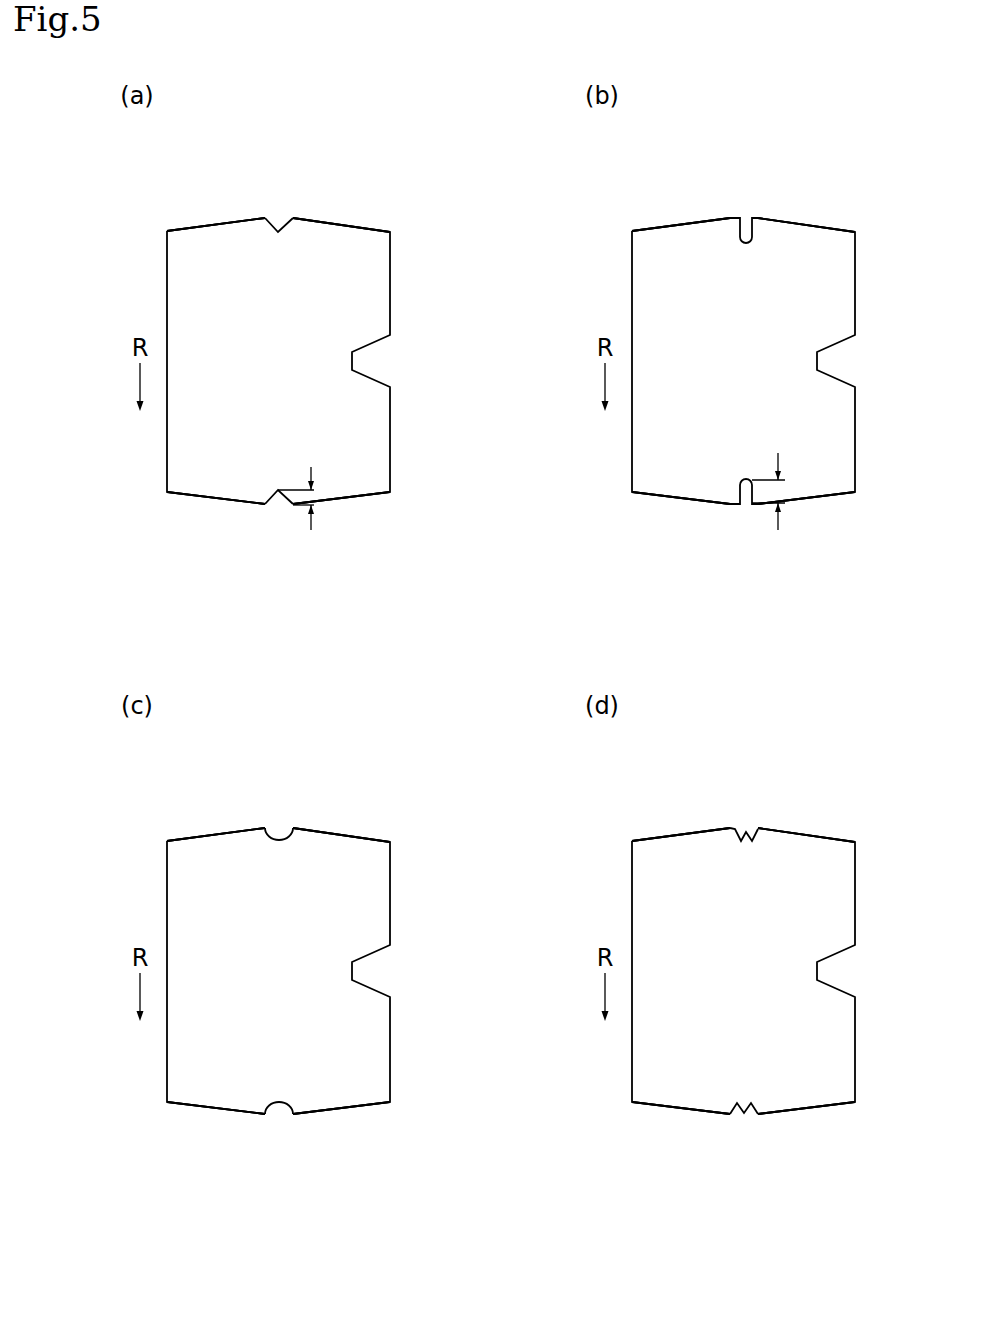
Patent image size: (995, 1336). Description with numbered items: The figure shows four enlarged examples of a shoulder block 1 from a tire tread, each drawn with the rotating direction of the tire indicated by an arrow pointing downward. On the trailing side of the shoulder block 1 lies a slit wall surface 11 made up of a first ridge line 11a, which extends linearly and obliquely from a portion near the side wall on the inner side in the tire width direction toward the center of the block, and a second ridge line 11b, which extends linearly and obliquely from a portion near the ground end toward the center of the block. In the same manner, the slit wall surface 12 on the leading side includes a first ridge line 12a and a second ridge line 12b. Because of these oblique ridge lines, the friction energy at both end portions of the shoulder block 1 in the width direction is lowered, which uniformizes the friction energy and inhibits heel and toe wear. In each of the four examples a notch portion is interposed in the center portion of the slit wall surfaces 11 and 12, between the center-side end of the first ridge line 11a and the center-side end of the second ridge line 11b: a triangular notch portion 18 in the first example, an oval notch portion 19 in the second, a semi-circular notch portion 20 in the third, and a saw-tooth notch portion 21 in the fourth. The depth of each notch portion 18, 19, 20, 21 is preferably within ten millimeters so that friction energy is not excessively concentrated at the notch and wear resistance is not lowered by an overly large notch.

The shoulder block 1 is at (177, 299).
The slit wall surface 11 is at (360, 141).
The first ridge line 11a is at (320, 222).
The second ridge line 11b is at (233, 221).
The slit wall surface 12 is at (370, 575).
The first ridge line 12a is at (328, 505).
The second ridge line 12b is at (243, 505).
The triangular notch portion 18 is at (267, 223).
The oval notch portion 19 is at (756, 374).
The semi-circular notch portion 20 is at (266, 971).
The saw-tooth notch portion 21 is at (732, 971).